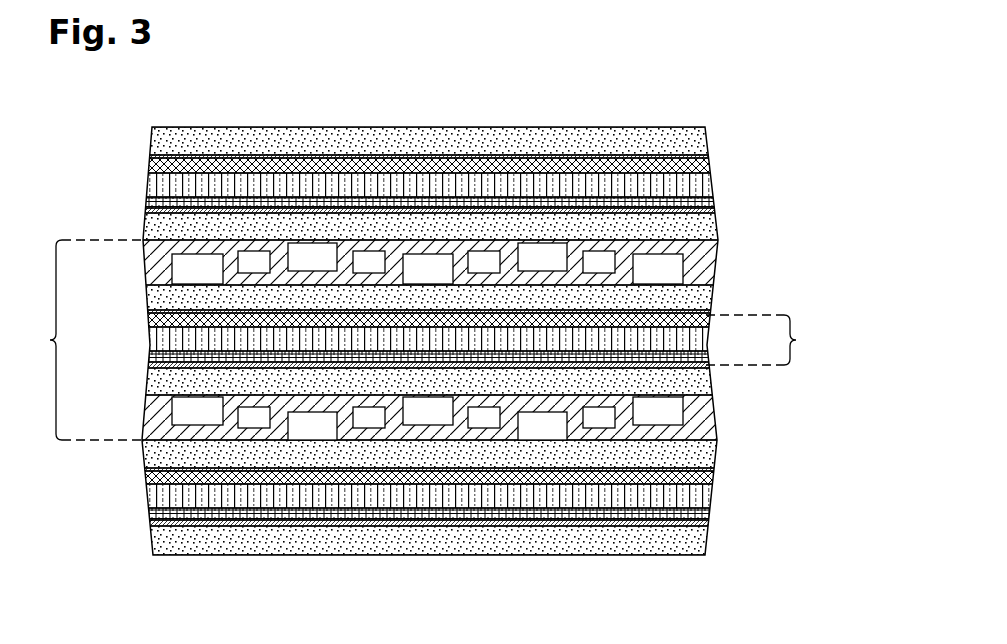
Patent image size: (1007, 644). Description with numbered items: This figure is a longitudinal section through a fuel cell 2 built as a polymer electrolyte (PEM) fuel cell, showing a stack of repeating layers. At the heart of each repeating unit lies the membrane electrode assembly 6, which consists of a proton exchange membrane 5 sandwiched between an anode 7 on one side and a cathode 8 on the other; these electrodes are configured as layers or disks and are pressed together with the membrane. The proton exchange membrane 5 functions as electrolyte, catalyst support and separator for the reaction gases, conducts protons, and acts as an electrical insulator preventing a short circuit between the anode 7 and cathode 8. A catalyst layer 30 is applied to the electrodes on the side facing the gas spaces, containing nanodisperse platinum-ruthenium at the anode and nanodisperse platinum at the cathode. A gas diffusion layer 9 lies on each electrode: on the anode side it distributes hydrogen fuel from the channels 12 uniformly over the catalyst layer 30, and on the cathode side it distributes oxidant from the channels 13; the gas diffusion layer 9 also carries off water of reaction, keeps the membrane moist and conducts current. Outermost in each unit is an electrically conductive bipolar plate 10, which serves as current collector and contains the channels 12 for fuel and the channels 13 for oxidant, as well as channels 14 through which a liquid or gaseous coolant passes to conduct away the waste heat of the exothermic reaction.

The fuel cell 2 is at (86, 340).
The proton exchange membrane 5 is at (706, 185).
The membrane electrode assembly 6 is at (762, 340).
The anode 7 is at (708, 165).
The cathode 8 is at (708, 205).
The gas diffusion layer 9 is at (154, 140).
The bipolar plate 10 is at (708, 256).
The channels for fuel 12 is at (205, 268).
The channels for oxidant 13 is at (315, 255).
The channels for coolant 14 is at (258, 262).
The catalyst layer 30 is at (421, 339).